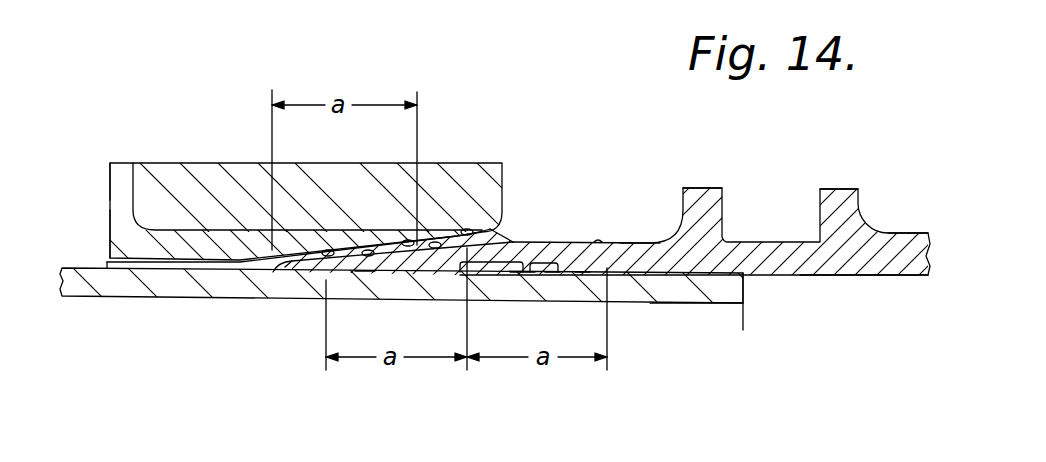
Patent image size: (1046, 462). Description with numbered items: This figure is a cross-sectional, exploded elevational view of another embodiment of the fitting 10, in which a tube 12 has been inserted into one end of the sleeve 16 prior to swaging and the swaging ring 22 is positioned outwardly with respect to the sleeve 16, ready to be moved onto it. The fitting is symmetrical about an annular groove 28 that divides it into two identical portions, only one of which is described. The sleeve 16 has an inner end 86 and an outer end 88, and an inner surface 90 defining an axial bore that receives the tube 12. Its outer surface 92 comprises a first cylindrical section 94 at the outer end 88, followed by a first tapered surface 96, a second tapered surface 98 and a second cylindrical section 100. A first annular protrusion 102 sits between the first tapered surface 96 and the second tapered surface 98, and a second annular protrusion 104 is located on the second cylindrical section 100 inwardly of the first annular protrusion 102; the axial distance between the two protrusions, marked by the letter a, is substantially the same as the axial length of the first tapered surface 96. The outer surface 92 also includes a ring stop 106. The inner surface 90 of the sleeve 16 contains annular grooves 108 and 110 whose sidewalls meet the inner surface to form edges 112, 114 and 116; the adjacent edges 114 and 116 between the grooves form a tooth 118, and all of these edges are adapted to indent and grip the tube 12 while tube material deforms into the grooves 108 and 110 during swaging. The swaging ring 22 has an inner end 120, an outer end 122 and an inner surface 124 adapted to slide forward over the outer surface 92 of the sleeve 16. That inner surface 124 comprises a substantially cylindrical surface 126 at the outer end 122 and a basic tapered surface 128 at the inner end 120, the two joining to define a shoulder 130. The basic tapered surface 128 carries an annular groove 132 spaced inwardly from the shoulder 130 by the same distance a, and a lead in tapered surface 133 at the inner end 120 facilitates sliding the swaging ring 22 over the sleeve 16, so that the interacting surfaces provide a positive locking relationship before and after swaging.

The fitting 10 is at (213, 66).
The tube 12 is at (105, 300).
The sleeve 16 is at (928, 240).
The swaging ring 22 is at (181, 163).
The annular groove 28 is at (770, 242).
The inner end 86 is at (670, 275).
The outer end 88 is at (290, 276).
The inner surface 90 is at (860, 275).
The outer surface 92 is at (895, 230).
The first cylindrical section 94 is at (295, 272).
The first tapered surface 96 is at (360, 285).
The second tapered surface 98 is at (500, 242).
The second cylindrical section 100 is at (642, 242).
The first annular protrusion 102 is at (483, 242).
The second annular protrusion 104 is at (600, 242).
The ring stop 106 is at (705, 188).
The annular groove 108 is at (490, 275).
The annular groove 110 is at (580, 273).
The edge 112 is at (445, 275).
The edge 114 is at (518, 273).
The edge 116 is at (552, 273).
The tooth 118 is at (527, 273).
The inner end 120 is at (502, 192).
The outer end 122 is at (103, 182).
The inner surface 124 is at (103, 258).
The cylindrical surface 126 is at (146, 262).
The basic tapered surface 128 is at (343, 233).
The shoulder 130 is at (262, 268).
The annular groove 132 is at (417, 242).
The lead in tapered surface 133 is at (473, 242).